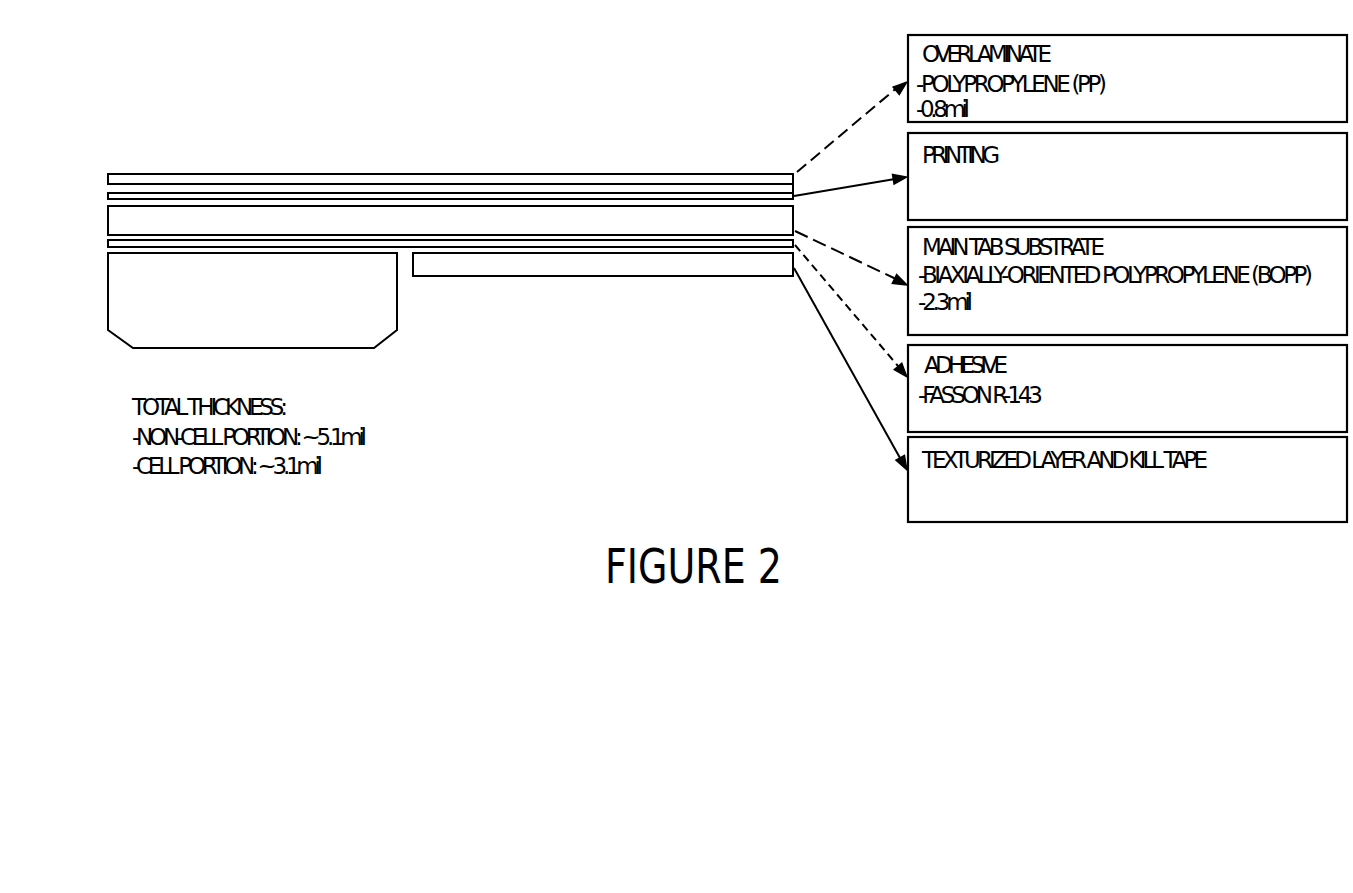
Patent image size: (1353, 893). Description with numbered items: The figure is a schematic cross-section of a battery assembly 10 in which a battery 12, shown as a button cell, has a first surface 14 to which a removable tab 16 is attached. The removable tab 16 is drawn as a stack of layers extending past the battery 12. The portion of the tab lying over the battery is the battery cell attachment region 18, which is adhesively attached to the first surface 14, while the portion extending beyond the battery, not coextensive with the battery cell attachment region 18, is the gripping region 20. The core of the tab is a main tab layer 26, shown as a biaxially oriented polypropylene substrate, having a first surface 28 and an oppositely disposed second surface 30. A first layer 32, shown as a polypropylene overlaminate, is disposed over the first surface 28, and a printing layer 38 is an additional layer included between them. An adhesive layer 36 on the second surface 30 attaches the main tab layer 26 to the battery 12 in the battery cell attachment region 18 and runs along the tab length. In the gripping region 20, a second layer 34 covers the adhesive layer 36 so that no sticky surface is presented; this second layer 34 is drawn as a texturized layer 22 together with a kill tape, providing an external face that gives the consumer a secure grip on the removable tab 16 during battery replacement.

The battery assembly 10 is at (545, 117).
The battery 12 is at (108, 315).
The first surface 14 is at (108, 253).
The removable tab 16 is at (627, 171).
The battery cell attachment region 18 is at (222, 173).
The gripping region 20 is at (791, 153).
The texturized layer 22 is at (716, 278).
The main tab layer 26 is at (794, 217).
The first surface 28 is at (368, 207).
The second surface 30 is at (378, 237).
The first layer 32 is at (715, 176).
The second layer 34 is at (611, 278).
The adhesive layer 36 is at (794, 245).
The printing layer 38 is at (780, 195).